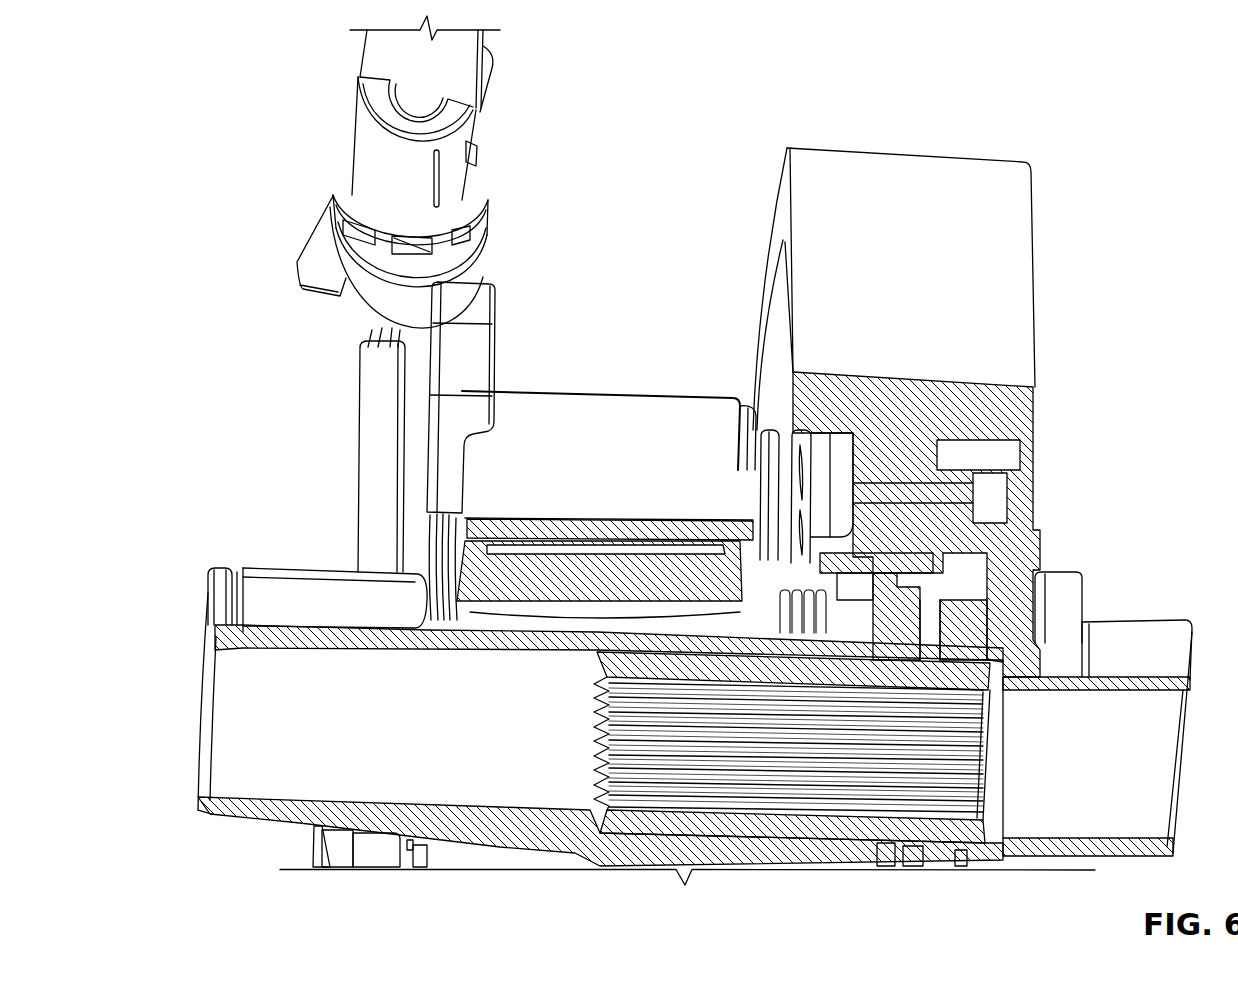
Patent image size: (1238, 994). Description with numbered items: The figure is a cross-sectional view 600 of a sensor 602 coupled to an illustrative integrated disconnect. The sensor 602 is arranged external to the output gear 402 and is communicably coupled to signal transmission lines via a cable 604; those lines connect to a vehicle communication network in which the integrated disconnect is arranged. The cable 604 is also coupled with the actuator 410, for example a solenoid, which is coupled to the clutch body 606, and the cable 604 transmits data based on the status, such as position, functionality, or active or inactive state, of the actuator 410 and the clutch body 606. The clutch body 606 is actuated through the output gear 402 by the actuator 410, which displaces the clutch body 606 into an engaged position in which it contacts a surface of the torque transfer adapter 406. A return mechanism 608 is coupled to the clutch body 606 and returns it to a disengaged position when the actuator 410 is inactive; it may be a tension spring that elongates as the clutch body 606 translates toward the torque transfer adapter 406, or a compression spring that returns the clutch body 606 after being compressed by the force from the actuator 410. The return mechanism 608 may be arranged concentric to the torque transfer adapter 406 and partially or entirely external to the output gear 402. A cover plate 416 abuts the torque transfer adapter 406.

The view 600 is at (170, 54).
The sensor 602 is at (360, 152).
The cable 604 is at (368, 480).
The actuator 410 is at (587, 408).
The clutch body 606 is at (767, 467).
The return mechanism 608 is at (745, 600).
The cover plate 416 is at (1035, 588).
The output gear 402 is at (247, 812).
The torque transfer adapter 406 is at (857, 785).